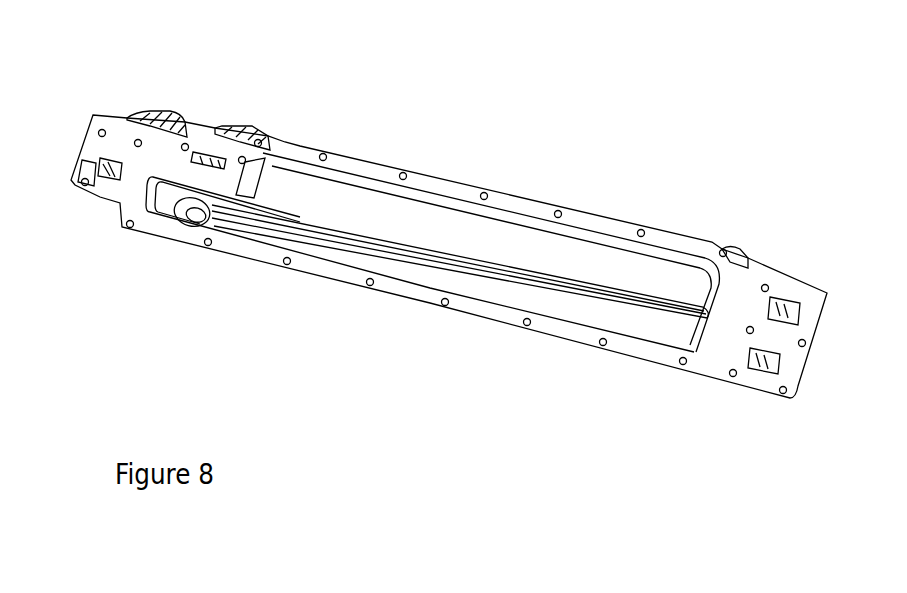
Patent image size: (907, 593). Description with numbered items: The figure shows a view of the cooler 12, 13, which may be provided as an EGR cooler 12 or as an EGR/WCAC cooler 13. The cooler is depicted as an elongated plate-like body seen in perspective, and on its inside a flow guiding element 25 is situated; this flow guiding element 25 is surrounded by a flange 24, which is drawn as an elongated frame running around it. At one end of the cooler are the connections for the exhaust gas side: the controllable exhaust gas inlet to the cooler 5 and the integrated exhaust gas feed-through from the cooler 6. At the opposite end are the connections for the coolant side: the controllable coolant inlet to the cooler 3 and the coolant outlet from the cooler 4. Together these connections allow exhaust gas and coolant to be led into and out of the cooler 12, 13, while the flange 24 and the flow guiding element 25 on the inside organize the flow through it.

The coolant inlet to the cooler 3 is at (774, 355).
The coolant outlet from the cooler 4 is at (795, 299).
The exhaust gas inlet to the cooler 5 is at (204, 151).
The integrated exhaust gas feed-through from the cooler 6 is at (106, 158).
The EGR cooler 12 is at (618, 190).
The EGR/WCAC cooler 13 is at (444, 262).
The flange 24 is at (379, 162).
The flow guiding element 25 is at (434, 250).